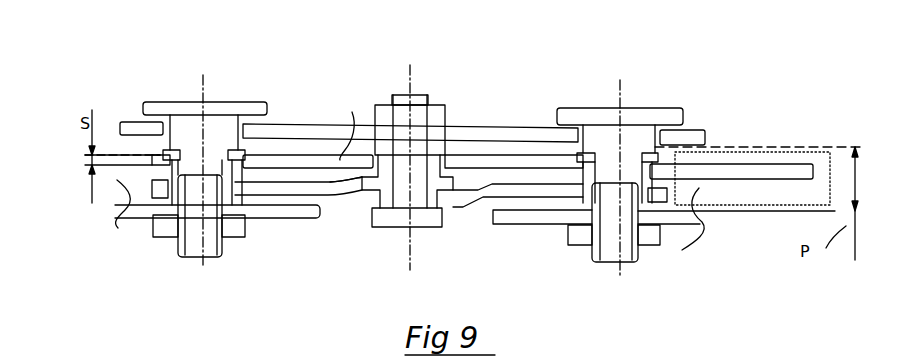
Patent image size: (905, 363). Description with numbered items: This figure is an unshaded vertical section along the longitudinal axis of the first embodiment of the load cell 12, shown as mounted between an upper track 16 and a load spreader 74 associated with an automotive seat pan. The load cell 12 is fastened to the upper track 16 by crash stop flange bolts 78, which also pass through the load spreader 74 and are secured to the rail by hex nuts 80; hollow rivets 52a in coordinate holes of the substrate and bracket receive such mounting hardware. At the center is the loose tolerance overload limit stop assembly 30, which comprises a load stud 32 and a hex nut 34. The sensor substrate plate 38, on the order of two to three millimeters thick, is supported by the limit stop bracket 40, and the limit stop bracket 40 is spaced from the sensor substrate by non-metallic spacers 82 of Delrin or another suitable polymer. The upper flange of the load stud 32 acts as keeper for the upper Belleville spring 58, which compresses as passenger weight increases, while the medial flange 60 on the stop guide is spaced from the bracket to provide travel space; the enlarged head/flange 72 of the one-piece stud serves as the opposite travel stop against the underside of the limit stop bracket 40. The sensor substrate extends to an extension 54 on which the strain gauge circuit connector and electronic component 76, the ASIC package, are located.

The load cell 12 is at (425, 265).
The upper track 16 is at (517, 215).
The loose tolerance overload limit stop assembly 30 is at (417, 153).
The load stud 32 is at (420, 98).
The hex nut 34 is at (444, 151).
The sensor substrate plate 38 is at (515, 158).
The limit stop bracket 40 is at (503, 193).
The hollow rivet 52a is at (160, 152).
The extension 54 is at (752, 178).
The upper Belleville spring 58 is at (343, 128).
The medial flange 60 is at (335, 197).
The enlarged head/flange 72 is at (383, 222).
The load spreader 74 is at (493, 133).
The strain gauge circuit connector and electronic component 76 is at (772, 193).
The crash stop flange bolt 78 is at (193, 101).
The hex nut 80 is at (235, 240).
The non-metallic spacer 82 is at (168, 172).